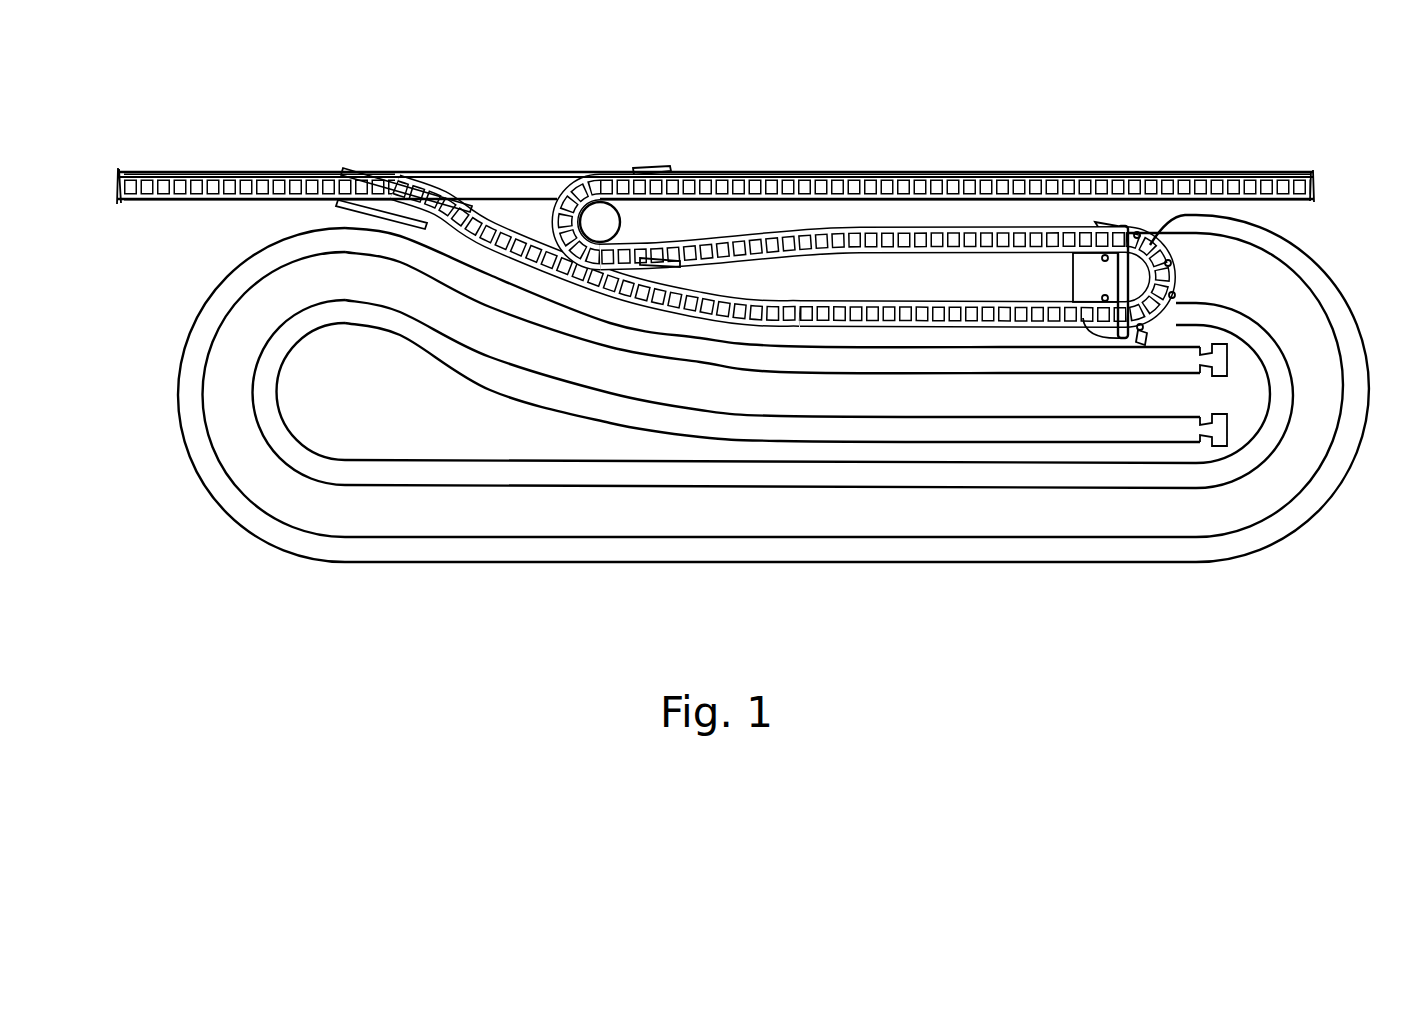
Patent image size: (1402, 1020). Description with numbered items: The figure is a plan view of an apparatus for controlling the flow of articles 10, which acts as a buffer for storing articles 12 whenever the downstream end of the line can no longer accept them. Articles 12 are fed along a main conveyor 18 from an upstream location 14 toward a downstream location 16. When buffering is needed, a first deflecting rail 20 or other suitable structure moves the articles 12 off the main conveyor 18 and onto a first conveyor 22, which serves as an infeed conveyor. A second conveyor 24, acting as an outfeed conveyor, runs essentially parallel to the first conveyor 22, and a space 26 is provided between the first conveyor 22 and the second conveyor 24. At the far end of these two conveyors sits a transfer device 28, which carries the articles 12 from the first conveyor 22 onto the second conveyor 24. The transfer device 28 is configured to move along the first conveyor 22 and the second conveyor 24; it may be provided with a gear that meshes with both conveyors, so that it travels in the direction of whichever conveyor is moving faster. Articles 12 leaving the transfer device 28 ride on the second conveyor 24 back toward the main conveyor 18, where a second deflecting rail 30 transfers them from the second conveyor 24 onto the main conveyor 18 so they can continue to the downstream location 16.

The apparatus for controlling the flow of articles 10 is at (456, 578).
The articles 12 is at (962, 178).
The upstream location 14 is at (1318, 165).
The downstream location 16 is at (116, 170).
The main conveyor 18 is at (523, 172).
The first deflecting rail 20 is at (635, 176).
The first conveyor 22 is at (742, 232).
The second conveyor 24 is at (1090, 468).
The space 26 is at (1050, 273).
The transfer device 28 is at (1150, 243).
The second deflecting rail 30 is at (368, 166).